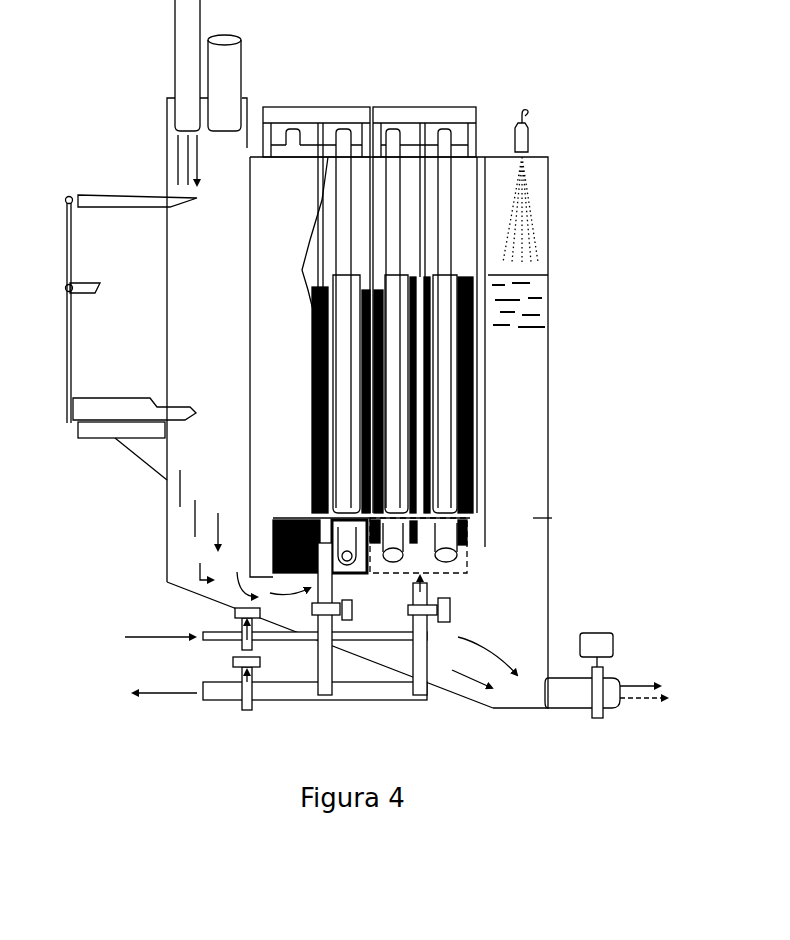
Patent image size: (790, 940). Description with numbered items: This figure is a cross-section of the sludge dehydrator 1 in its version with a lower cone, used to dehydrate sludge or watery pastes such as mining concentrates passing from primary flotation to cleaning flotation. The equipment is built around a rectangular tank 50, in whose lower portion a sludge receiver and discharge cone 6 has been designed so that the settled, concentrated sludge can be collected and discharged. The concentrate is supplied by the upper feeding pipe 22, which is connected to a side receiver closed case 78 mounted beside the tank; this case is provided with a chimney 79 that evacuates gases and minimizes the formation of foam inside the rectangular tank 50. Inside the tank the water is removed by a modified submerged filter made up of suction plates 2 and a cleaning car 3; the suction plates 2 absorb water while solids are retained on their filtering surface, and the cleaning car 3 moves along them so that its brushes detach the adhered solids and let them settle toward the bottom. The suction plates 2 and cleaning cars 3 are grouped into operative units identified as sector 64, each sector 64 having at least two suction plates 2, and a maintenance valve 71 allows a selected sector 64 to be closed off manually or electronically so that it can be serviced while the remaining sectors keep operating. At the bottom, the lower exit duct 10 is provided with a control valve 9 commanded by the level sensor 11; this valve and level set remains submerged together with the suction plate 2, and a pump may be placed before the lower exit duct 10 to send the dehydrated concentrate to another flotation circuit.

The sludge dehydrator 1 is at (548, 375).
The suction plate 2 is at (447, 345).
The cleaning car 3 is at (455, 117).
The sludge receiver and discharge cone 6 is at (178, 591).
The control valve 9 is at (605, 645).
The lower exit duct 10 is at (565, 695).
The level sensor 11 is at (528, 130).
The upper feeding pipe 22 is at (183, 60).
The rectangular tank 50 is at (552, 518).
The sector 64 is at (325, 107).
The maintenance valve 71 is at (452, 618).
The side receiver closed case 78 is at (167, 173).
The chimney 79 is at (235, 60).